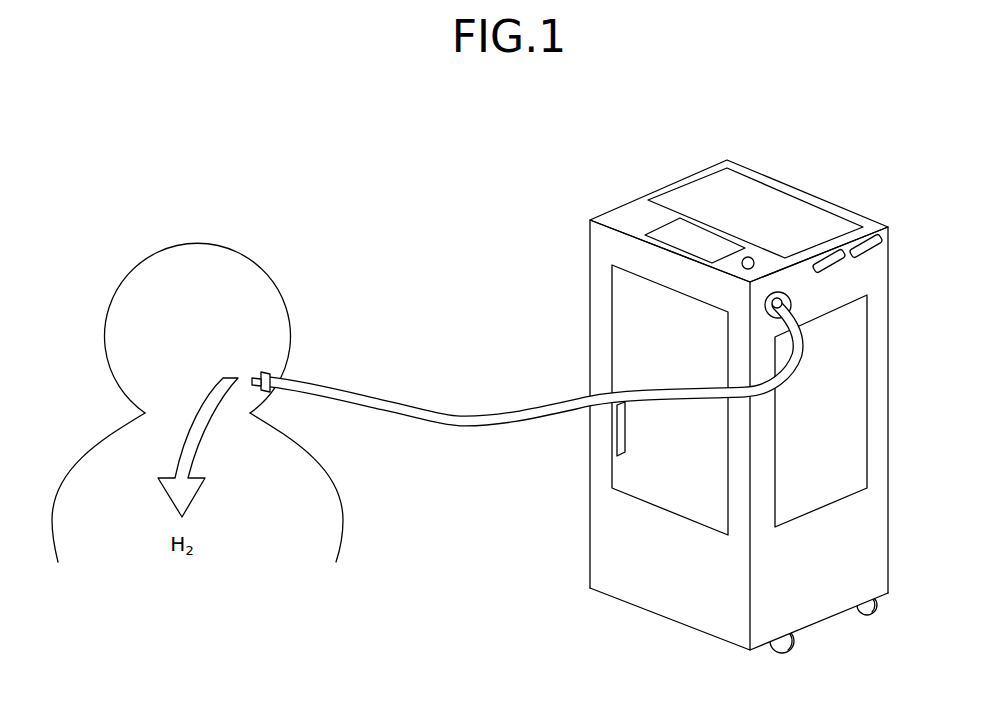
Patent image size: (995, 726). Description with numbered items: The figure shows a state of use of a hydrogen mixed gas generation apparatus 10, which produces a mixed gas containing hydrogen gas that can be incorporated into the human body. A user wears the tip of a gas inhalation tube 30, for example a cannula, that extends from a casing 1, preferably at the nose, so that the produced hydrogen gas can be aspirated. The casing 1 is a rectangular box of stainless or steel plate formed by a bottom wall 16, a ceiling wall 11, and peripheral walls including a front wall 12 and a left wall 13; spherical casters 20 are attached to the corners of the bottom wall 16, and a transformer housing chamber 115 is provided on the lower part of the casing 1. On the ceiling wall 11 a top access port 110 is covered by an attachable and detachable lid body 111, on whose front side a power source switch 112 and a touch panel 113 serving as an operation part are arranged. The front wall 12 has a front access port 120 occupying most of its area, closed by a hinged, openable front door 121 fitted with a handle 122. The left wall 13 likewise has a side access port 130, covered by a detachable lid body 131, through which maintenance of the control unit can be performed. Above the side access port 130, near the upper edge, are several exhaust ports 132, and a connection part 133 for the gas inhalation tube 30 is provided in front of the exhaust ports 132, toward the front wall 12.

The casing 1 is at (826, 200).
The hydrogen mixed gas generation apparatus 10 is at (809, 133).
The ceiling wall 11 is at (643, 207).
The top access port 110 is at (700, 170).
The lid body 111 is at (763, 208).
The power source switch 112 is at (754, 268).
The touch panel 113 is at (677, 237).
The transformer housing chamber 115 is at (615, 572).
The front wall 12 is at (600, 333).
The front access port 120 is at (610, 472).
The front door 121 is at (643, 490).
The handle 122 is at (615, 437).
The left wall 13 is at (875, 377).
The side access port 130 is at (870, 455).
The lid body 131 is at (850, 410).
The exhaust ports 132 is at (838, 276).
The connection part 133 is at (790, 297).
The bottom wall 16 is at (828, 624).
The casters 20 is at (783, 655).
The gas inhalation tube 30 is at (387, 398).